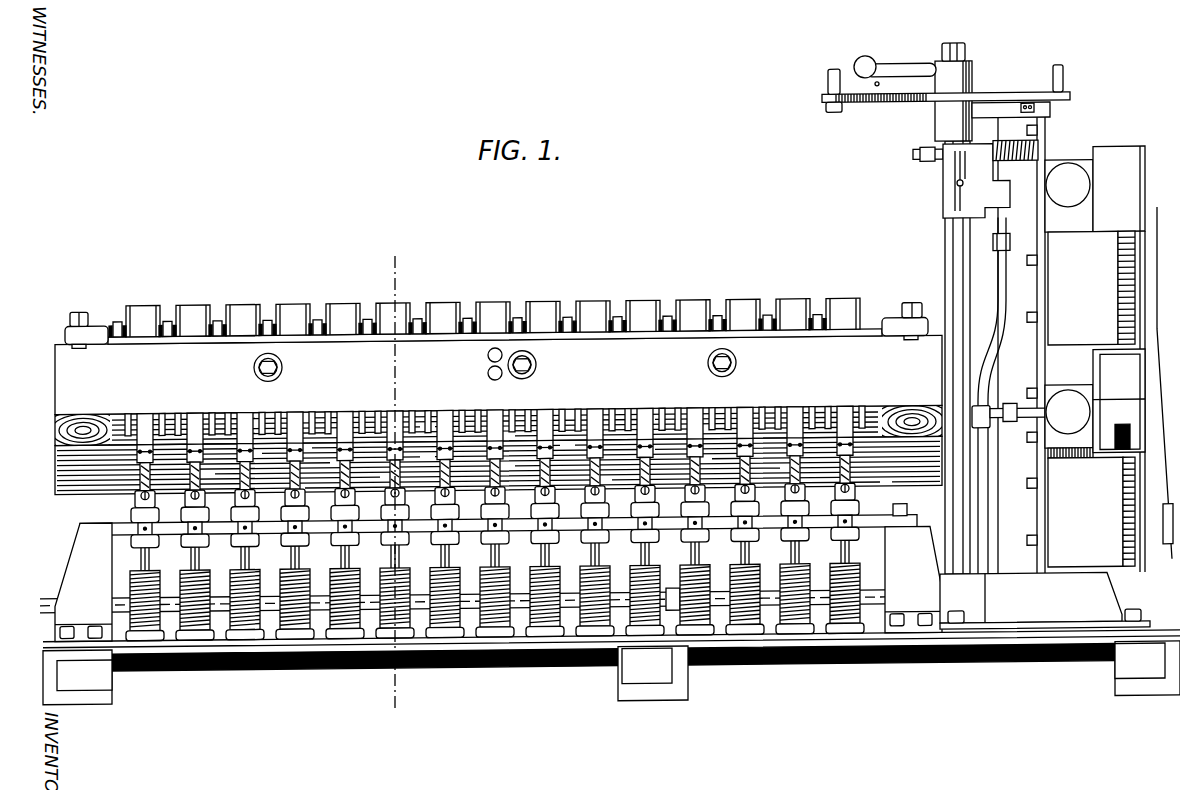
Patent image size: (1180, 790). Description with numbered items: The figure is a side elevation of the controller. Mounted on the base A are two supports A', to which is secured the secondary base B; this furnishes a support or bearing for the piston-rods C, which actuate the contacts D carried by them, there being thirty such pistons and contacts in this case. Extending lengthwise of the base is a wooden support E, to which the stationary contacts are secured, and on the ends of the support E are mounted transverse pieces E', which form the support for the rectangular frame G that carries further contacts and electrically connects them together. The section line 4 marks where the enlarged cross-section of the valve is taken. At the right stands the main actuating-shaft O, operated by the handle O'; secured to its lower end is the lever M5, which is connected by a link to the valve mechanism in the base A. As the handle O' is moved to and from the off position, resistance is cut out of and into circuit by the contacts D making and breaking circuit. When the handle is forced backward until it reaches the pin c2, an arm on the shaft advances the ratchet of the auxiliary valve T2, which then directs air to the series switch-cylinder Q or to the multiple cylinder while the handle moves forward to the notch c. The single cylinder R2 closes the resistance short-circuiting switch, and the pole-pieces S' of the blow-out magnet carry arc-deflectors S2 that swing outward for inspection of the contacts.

The operating-handle O' is at (895, 57).
The pin c2 is at (828, 82).
The notch c is at (912, 100).
The cylinder R2 is at (1068, 178).
The arc-deflectors S2 is at (1125, 156).
The auxiliary valve T2 is at (962, 211).
The main actuating-shaft O is at (939, 309).
The rectangular frame G is at (498, 358).
The contacts D is at (194, 414).
The transverse pieces E' is at (481, 411).
The wooden support E is at (475, 465).
The secondary base B is at (118, 503).
The piston-rods C is at (150, 556).
The supports A' is at (498, 572).
The base A is at (611, 670).
The series switch-cylinder Q is at (1068, 405).
The lever M5 is at (990, 606).
The pole-pieces S' is at (1167, 409).
The section line 4 is at (394, 485).